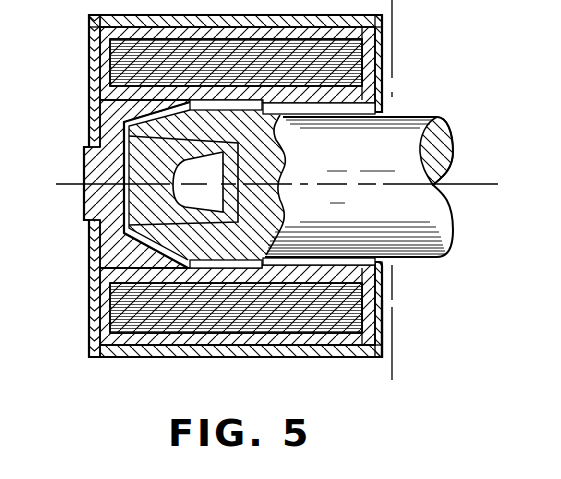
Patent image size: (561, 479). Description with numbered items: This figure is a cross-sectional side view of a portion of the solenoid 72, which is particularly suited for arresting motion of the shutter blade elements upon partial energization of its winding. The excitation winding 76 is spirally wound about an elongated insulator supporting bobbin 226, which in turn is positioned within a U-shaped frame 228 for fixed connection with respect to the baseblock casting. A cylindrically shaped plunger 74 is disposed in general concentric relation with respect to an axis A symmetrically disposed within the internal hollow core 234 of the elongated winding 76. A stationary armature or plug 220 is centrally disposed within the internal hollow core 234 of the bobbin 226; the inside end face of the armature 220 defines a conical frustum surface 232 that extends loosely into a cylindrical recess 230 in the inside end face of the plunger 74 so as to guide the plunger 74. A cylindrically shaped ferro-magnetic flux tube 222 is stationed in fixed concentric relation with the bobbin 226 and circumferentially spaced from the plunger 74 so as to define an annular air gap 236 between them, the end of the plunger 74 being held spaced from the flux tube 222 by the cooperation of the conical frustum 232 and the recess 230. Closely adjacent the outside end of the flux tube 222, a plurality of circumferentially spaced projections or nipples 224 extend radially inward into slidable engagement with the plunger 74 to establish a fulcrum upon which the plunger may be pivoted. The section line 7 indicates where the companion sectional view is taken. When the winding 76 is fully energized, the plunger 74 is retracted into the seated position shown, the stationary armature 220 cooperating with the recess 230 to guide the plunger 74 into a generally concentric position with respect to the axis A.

The solenoid 72 is at (86, 372).
The U-shaped frame 228 is at (147, 357).
The annular air gap 236 is at (292, 266).
The stationary armature 220 is at (160, 160).
The excitation winding 76 is at (228, 318).
The conical frustum surface 232 is at (201, 224).
The cylindrical recess 230 is at (278, 166).
The internal hollow core 234 is at (292, 112).
The ferro-magnetic flux tube 222 is at (384, 267).
The projections or nipples 224 is at (349, 262).
The plunger 74 is at (410, 117).
The bobbin 226 is at (382, 344).
The axis A is at (464, 184).
The section line 7- 7 is at (343, 6).